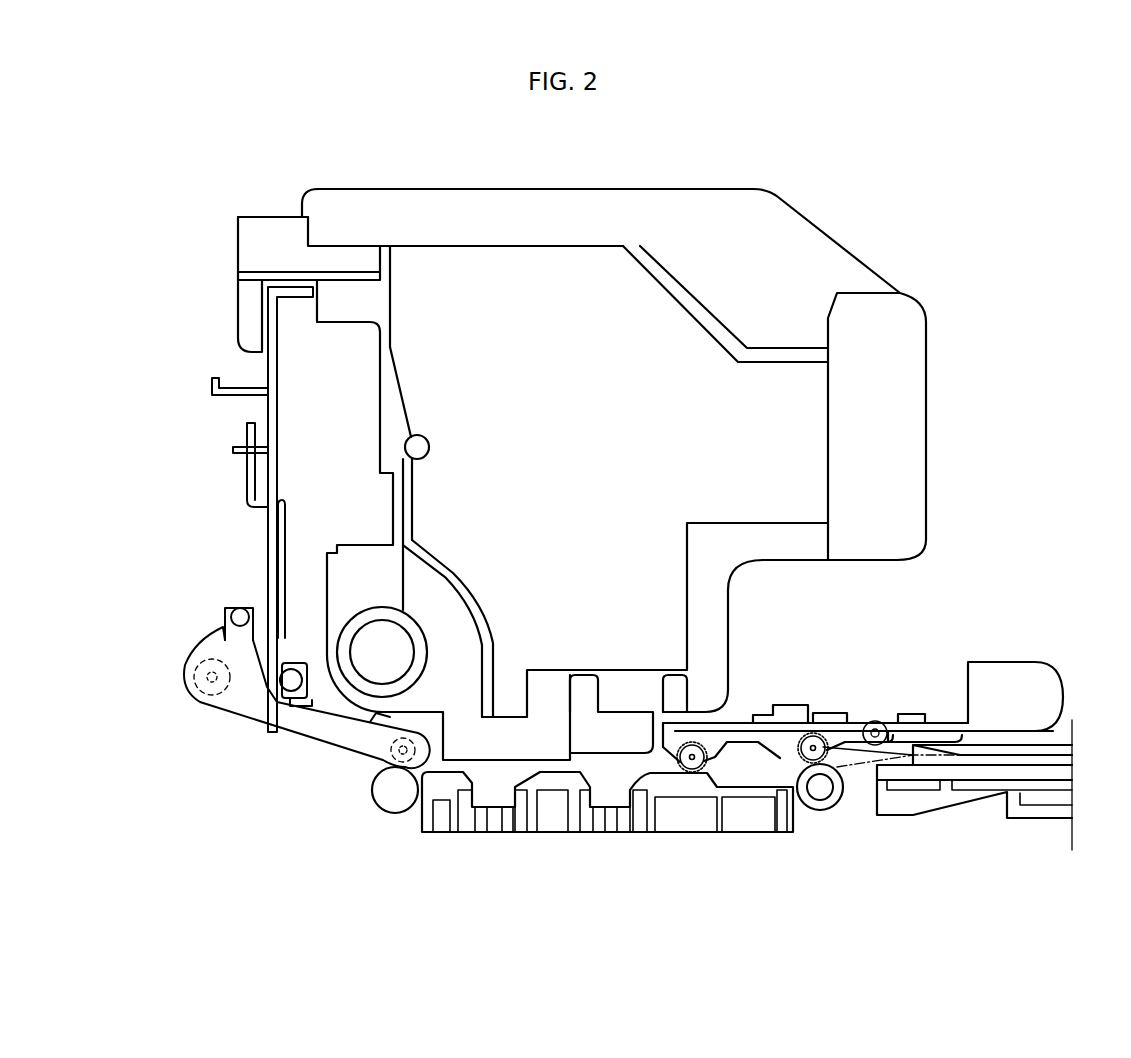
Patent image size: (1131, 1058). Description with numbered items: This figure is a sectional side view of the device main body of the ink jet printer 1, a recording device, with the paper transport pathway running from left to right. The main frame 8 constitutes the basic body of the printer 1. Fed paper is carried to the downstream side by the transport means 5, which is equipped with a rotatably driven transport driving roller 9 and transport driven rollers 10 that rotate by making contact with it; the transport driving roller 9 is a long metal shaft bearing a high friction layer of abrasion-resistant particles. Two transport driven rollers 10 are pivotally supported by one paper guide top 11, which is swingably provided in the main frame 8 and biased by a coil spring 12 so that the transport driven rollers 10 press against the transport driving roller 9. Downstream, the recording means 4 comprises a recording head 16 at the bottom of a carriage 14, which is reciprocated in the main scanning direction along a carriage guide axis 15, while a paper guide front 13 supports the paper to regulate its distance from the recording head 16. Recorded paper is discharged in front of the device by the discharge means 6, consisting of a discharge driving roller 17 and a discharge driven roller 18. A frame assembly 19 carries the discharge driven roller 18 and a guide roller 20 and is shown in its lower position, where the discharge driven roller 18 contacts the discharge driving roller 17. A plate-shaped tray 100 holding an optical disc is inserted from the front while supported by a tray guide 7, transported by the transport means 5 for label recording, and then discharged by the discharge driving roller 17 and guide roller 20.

The printer 1 is at (1010, 226).
The recording means 4 is at (586, 852).
The transport means 5 is at (390, 878).
The discharge means 6 is at (908, 878).
The tray guide 7 is at (958, 795).
The main frame 8 is at (268, 380).
The transport driving roller 9 is at (382, 812).
The transport driven roller 10 is at (355, 757).
The paper guide top 11 is at (250, 713).
The coil spring 12 is at (298, 660).
The paper guide front 13 is at (665, 832).
The carriage 14 is at (513, 278).
The carriage guide axis 15 is at (393, 640).
The recording head 16 is at (530, 732).
The discharge driving roller 17 is at (825, 812).
The discharge driven roller 18 is at (822, 752).
The frame assembly 19 is at (843, 686).
The guide roller 20 is at (878, 725).
The tray 100 is at (1022, 752).